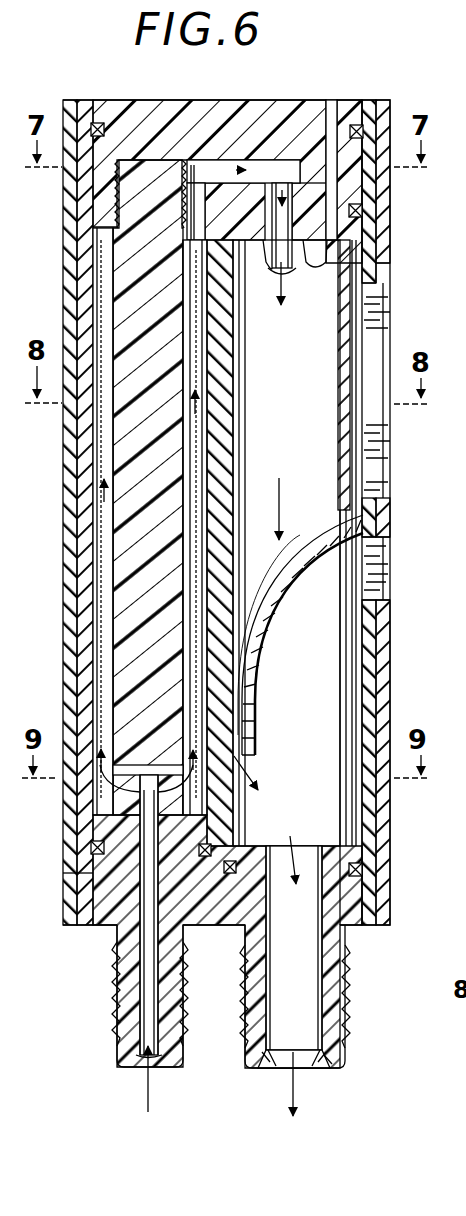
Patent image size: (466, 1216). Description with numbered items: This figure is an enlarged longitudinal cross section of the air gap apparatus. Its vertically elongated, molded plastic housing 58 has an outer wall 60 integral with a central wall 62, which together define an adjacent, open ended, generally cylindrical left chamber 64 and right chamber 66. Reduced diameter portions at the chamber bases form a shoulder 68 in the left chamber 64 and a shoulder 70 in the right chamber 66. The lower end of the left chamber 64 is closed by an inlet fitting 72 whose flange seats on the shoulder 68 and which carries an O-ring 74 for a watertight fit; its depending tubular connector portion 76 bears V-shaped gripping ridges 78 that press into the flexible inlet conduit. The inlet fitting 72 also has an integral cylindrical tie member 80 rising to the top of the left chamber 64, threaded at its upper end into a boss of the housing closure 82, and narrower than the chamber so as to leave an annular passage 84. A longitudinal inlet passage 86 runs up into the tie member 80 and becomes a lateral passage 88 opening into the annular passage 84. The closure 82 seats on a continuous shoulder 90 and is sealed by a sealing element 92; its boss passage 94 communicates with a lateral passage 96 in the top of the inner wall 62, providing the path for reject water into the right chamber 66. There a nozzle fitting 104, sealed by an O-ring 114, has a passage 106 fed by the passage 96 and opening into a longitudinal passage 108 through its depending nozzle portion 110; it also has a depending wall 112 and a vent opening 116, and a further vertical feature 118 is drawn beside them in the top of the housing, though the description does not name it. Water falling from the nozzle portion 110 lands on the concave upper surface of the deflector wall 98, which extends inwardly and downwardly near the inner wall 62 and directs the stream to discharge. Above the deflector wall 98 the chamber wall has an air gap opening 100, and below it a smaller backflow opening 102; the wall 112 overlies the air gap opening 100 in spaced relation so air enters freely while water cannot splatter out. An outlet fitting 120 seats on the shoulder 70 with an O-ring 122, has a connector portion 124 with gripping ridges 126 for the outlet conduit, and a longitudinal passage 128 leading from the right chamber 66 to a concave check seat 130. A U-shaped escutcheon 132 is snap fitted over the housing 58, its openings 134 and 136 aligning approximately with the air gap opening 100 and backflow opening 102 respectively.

The housing 58 is at (87, 99).
The outer wall 60 is at (83, 300).
The central wall 62 is at (219, 412).
The left chamber 64 is at (189, 469).
The right chamber 66 is at (309, 463).
The shoulder 68 is at (86, 882).
The shoulder 70 is at (373, 893).
The inlet fitting 72 is at (112, 965).
The O-ring 74 is at (96, 851).
The tubular connector portion 76 is at (166, 1062).
The gripping ridges 78 is at (118, 1046).
The tie member 80 is at (121, 427).
The housing closure 82 is at (232, 108).
The annular passage 84 is at (108, 535).
The inlet passage 86 is at (151, 940).
The lateral passage 88 is at (126, 769).
The shoulder 90 is at (104, 128).
The sealing element 92 is at (364, 130).
The passage 94 is at (198, 190).
The lateral passage 96 is at (251, 176).
The deflector wall 98 is at (283, 579).
The air gap opening 100 is at (373, 292).
The backflow opening 102 is at (373, 600).
The nozzle fitting 104 is at (301, 250).
The passage 106 is at (252, 246).
The longitudinal passage 108 is at (301, 299).
The nozzle portion 110 is at (288, 282).
The depending wall 112 is at (343, 416).
The O-ring 114 is at (363, 212).
The vent opening 116 is at (322, 184).
The vertical passage 118 is at (333, 118).
The outlet fitting 120 is at (349, 965).
The O-ring 122 is at (364, 870).
The connector portion 124 is at (253, 994).
The gripping ridges 126 is at (340, 1050).
The longitudinal passage 128 is at (268, 959).
The check seat 130 is at (313, 1066).
The escutcheon 132 is at (386, 708).
The opening 134 is at (391, 500).
The opening 136 is at (386, 540).